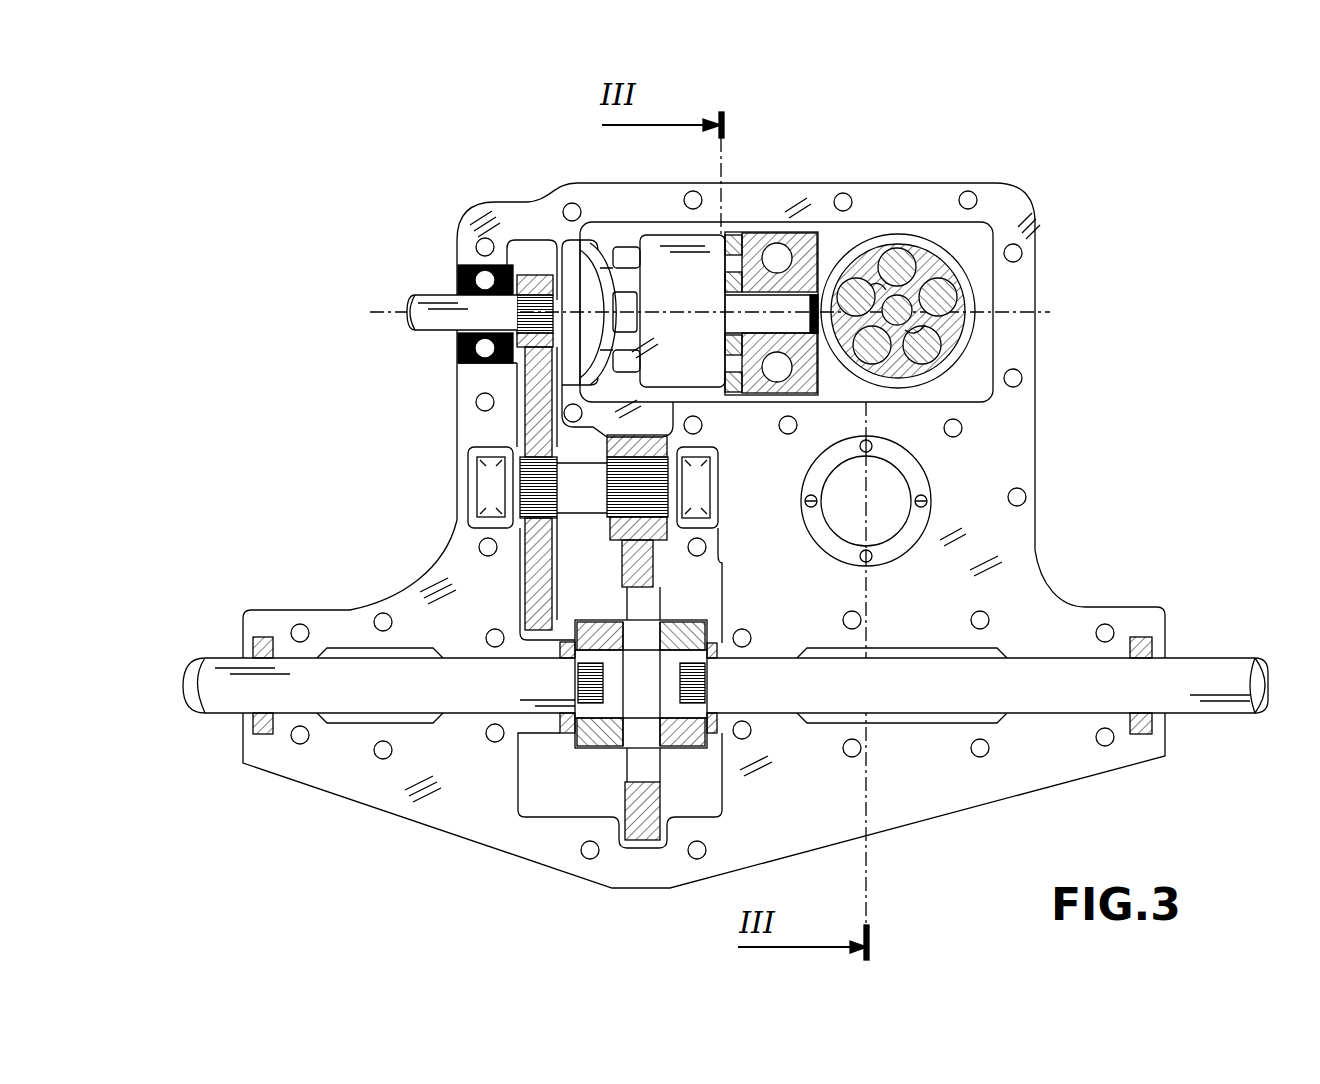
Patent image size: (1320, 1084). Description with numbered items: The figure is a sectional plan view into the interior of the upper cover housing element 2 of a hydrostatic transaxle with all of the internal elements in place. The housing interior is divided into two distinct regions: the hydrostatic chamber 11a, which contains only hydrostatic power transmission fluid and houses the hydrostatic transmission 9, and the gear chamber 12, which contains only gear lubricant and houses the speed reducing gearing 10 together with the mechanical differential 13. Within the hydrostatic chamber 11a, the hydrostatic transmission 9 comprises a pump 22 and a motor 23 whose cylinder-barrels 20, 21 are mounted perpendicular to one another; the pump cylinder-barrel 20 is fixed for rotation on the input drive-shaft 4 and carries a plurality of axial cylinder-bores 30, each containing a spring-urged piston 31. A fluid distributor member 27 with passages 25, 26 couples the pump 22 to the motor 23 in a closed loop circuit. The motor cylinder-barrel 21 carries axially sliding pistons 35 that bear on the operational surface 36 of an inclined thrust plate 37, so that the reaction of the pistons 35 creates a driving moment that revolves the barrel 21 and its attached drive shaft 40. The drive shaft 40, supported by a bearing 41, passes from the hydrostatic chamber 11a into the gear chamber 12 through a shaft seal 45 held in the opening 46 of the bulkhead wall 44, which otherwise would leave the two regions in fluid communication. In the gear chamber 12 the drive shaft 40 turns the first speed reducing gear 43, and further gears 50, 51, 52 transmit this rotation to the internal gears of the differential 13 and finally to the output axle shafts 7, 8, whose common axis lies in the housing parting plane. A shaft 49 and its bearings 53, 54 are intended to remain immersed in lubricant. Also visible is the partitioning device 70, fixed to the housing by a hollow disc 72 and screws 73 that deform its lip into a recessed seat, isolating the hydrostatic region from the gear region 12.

The upper cover housing element 2 is at (748, 592).
The input drive-shaft 4 is at (945, 330).
The output axle shaft 7 is at (1240, 668).
The output axle shaft 8 is at (232, 703).
The hydrostatic transmission 9 is at (1050, 153).
The speed reducing gearing 10 is at (395, 463).
The hydrostatic chamber 11a is at (838, 245).
The gear chamber 12 is at (570, 589).
The mechanical differential 13 is at (585, 772).
The pump cylinder-barrel 20 is at (933, 285).
The motor cylinder-barrel 21 is at (668, 300).
The hydrostatic-transmission pump 22 is at (978, 356).
The hydrostatic-transmission motor 23 is at (678, 220).
The fluid passage 25 is at (776, 258).
The fluid passage 26 is at (776, 366).
The fluid distributor member 27 is at (797, 240).
The axial cylinder-bore 30 is at (958, 292).
The piston 31 is at (930, 268).
The axially sliding piston 35 is at (630, 357).
The operational surface 36 is at (598, 383).
The inclined thrust plate 37 is at (590, 278).
The drive shaft 40 is at (408, 305).
The bearing 41 is at (480, 268).
The first speed reducing gear 43 is at (530, 280).
The internal bulkhead wall 44 is at (545, 372).
The shaft seal 45 is at (548, 345).
The opening 46 is at (532, 275).
The shaft 49 is at (568, 507).
The gear 50 is at (540, 580).
The gear 51 is at (613, 524).
The gear 52 is at (640, 803).
The shaft bearing 53 is at (485, 527).
The shaft bearing 54 is at (697, 522).
The partitioning device 70 is at (848, 512).
The hollow disc 72 is at (912, 474).
The screw 73 is at (930, 505).